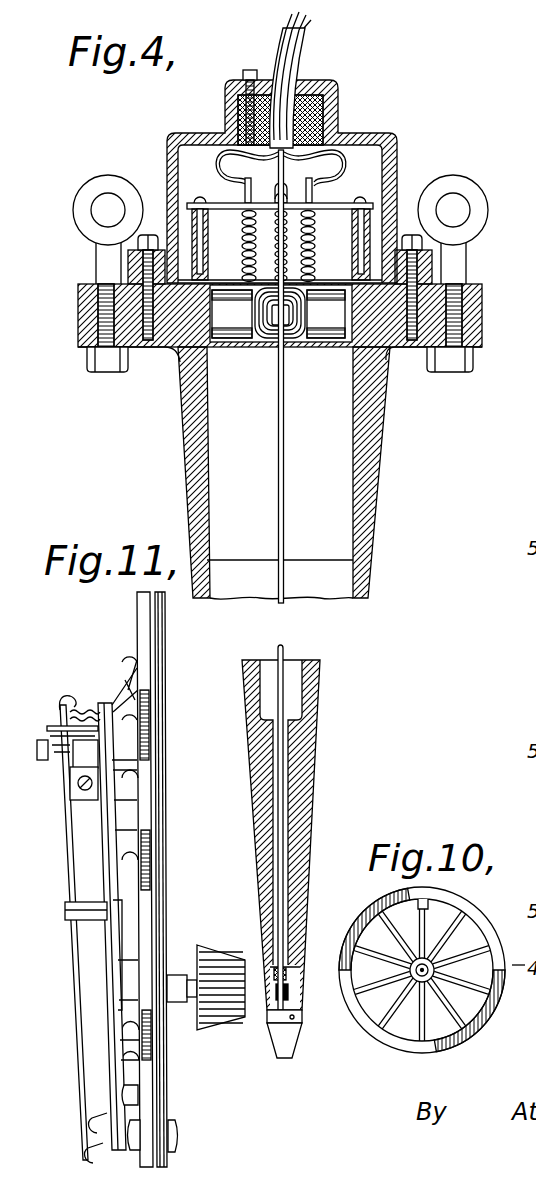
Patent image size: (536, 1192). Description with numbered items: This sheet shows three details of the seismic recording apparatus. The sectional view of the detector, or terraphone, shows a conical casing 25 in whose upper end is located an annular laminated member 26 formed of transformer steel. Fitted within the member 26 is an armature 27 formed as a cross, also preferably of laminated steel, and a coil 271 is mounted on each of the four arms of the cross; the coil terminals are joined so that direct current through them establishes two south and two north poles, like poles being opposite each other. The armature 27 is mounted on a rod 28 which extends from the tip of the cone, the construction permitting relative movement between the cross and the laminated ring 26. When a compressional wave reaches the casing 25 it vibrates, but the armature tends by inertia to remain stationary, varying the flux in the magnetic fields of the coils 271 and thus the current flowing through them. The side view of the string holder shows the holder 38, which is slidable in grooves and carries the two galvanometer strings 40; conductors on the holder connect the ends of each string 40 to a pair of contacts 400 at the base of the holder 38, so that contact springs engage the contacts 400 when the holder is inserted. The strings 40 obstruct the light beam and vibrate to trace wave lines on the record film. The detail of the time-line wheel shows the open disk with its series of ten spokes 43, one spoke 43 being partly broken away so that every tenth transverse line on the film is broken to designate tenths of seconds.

In FIG. 4, the conical casing 25 is at (367, 505).
In FIG. 4, the annular laminated member 26 is at (387, 350).
In FIG. 4, the armature 27 is at (280, 318).
In FIG. 4, the coil 271 is at (327, 325).
In FIG. 4, the rod 28 is at (285, 533).
In FIG. 11, the holder 38 is at (166, 888).
In FIG. 11, the strings 40 is at (75, 976).
In FIG. 11, the contacts 400 is at (125, 1093).
In FIG. 10, the spokes 43 is at (448, 1013).